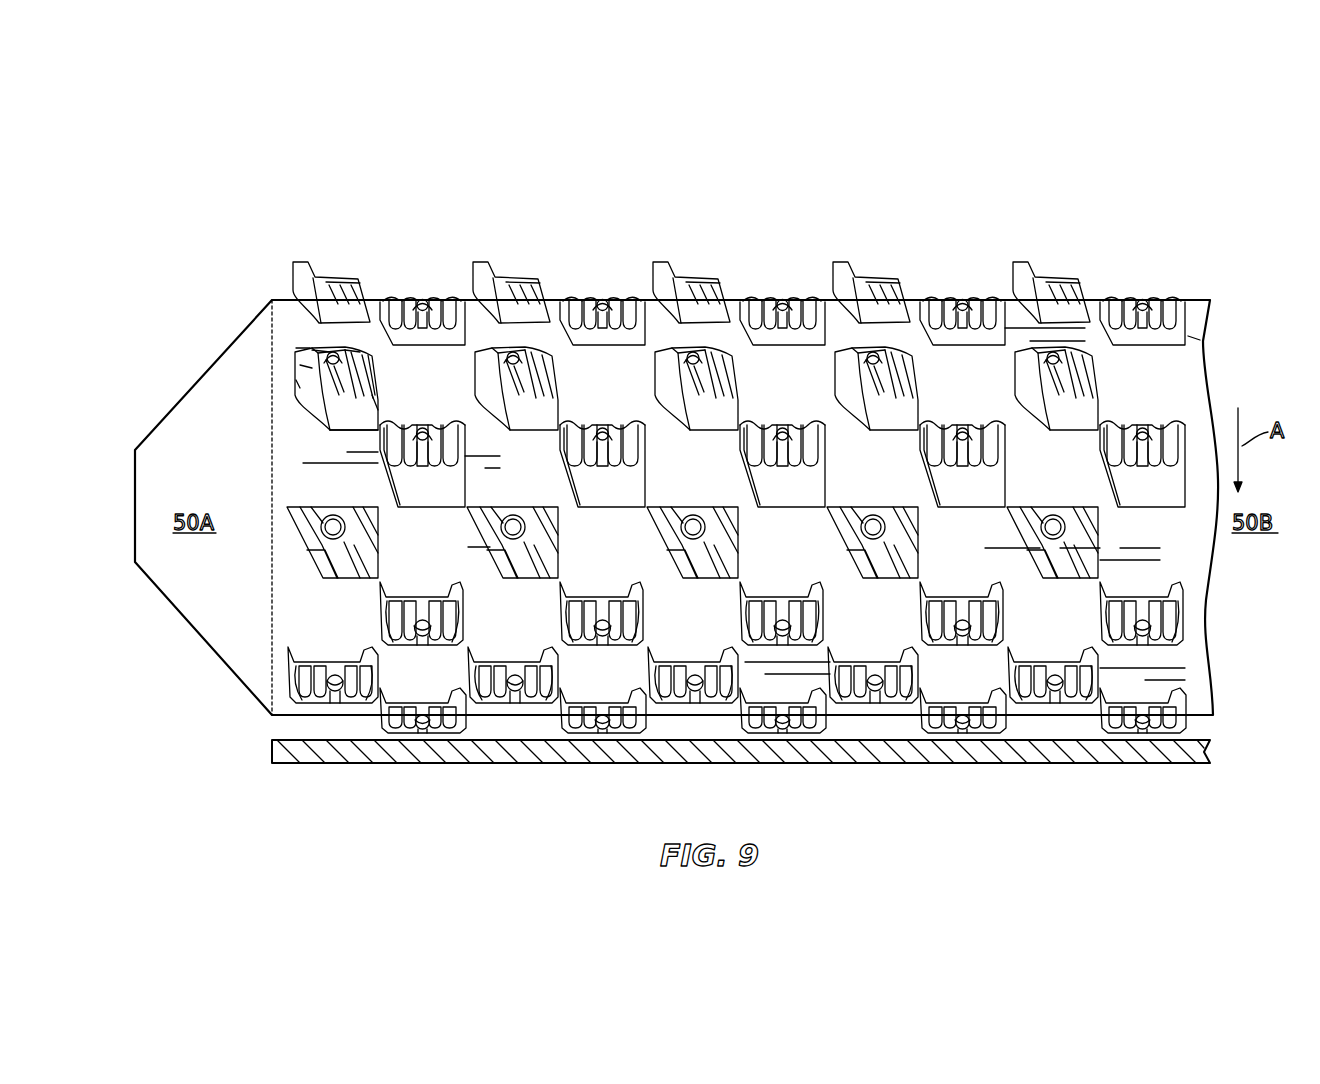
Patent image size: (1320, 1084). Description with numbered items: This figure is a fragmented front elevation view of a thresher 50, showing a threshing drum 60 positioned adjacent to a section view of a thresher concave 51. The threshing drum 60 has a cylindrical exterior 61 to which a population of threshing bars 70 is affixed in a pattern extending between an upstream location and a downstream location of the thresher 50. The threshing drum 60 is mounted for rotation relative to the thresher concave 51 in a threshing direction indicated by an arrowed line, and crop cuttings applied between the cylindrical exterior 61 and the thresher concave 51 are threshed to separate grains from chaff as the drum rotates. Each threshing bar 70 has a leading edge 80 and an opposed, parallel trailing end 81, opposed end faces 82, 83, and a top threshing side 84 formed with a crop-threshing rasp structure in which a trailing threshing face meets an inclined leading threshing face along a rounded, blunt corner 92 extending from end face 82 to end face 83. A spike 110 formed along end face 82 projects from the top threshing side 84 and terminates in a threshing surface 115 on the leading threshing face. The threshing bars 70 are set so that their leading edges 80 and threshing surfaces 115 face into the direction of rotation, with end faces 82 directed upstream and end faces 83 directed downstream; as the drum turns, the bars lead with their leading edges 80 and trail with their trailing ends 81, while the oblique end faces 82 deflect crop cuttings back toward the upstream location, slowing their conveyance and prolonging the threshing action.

The thresher 50 is at (1191, 170).
The thresher concave 51 is at (1175, 753).
The threshing drum 60 is at (1214, 362).
The cylindrical outer surface or exterior 61 is at (1192, 336).
The threshing bar 70 is at (341, 266).
The leading edge 80 is at (345, 441).
The trailing end 81 is at (310, 348).
The end face 82 is at (299, 386).
The end face 83 is at (379, 407).
The top threshing side 84 is at (356, 348).
The corner 92 is at (364, 388).
The spike 110 is at (331, 352).
The threshing surface 115 is at (312, 368).